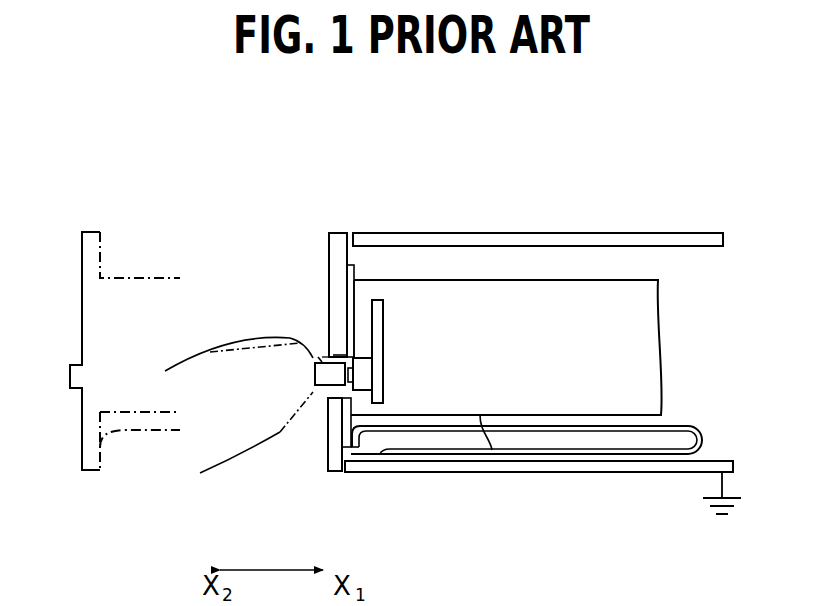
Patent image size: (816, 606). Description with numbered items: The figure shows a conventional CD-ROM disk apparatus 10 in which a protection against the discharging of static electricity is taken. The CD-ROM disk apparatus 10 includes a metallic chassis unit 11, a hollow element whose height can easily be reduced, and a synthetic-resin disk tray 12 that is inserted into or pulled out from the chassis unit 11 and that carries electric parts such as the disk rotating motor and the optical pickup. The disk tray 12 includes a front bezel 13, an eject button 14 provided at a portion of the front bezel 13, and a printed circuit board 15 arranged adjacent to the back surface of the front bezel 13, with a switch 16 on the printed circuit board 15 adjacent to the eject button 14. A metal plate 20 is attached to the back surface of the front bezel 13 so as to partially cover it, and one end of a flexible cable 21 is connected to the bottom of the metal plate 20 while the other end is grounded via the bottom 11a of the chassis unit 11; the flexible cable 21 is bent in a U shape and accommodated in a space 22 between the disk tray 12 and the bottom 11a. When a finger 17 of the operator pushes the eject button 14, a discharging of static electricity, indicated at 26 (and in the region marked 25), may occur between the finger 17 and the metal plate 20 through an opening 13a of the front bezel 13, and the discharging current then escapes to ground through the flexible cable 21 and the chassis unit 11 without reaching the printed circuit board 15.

The CD-ROM disk apparatus 10 is at (716, 121).
The chassis unit 11 is at (638, 222).
The bottom of the chassis unit 11a is at (593, 473).
The disk tray 12 is at (72, 300).
The front bezel 13 is at (328, 247).
The opening of the front bezel 13a is at (322, 356).
The eject button 14 is at (317, 390).
The printed circuit board 15 is at (384, 313).
The switch 16 is at (362, 372).
The finger 17 is at (240, 346).
The metal plate 20 is at (356, 290).
The flexible cable 21 is at (703, 438).
The space 22 is at (498, 462).
The contact spring 25 is at (333, 355).
The discharging of static electricity 26 is at (318, 357).